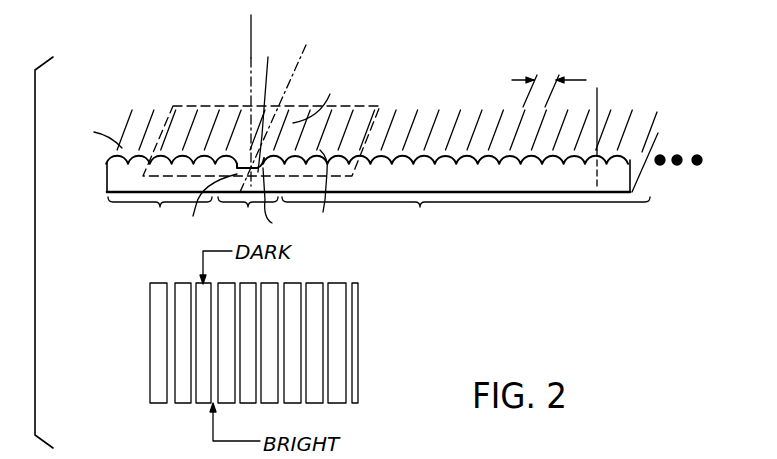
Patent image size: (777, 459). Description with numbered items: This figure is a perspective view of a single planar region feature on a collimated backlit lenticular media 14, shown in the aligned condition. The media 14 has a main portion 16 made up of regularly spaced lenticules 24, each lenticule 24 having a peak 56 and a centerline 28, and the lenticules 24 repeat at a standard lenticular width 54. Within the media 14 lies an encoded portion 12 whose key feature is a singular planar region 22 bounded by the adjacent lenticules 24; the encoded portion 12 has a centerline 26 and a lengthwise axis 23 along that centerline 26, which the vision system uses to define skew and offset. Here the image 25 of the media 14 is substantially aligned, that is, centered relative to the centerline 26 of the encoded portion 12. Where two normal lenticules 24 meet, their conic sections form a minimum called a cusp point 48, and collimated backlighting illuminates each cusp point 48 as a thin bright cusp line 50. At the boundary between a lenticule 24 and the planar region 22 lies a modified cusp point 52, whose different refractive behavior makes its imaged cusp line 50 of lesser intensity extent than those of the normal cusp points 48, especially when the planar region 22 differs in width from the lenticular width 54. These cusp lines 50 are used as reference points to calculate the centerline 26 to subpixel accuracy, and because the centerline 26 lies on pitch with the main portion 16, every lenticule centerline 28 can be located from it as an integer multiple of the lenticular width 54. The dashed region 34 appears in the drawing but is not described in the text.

The encoded portion 12 is at (248, 173).
The lenticular media 14 is at (620, 173).
The main portion 16 is at (378, 176).
The planar region 22 is at (273, 102).
The lengthwise axis 23 is at (308, 52).
The lenticule 24 is at (325, 94).
The image 25 is at (358, 327).
The centerline 26 is at (250, 55).
The centerline 28 is at (597, 102).
The region 34 is at (192, 105).
The cusp point 48 is at (336, 193).
The cusp line 50 is at (285, 302).
The modified cusp point 52 is at (239, 205).
The lenticular width 54 is at (552, 80).
The peak 56 is at (95, 134).